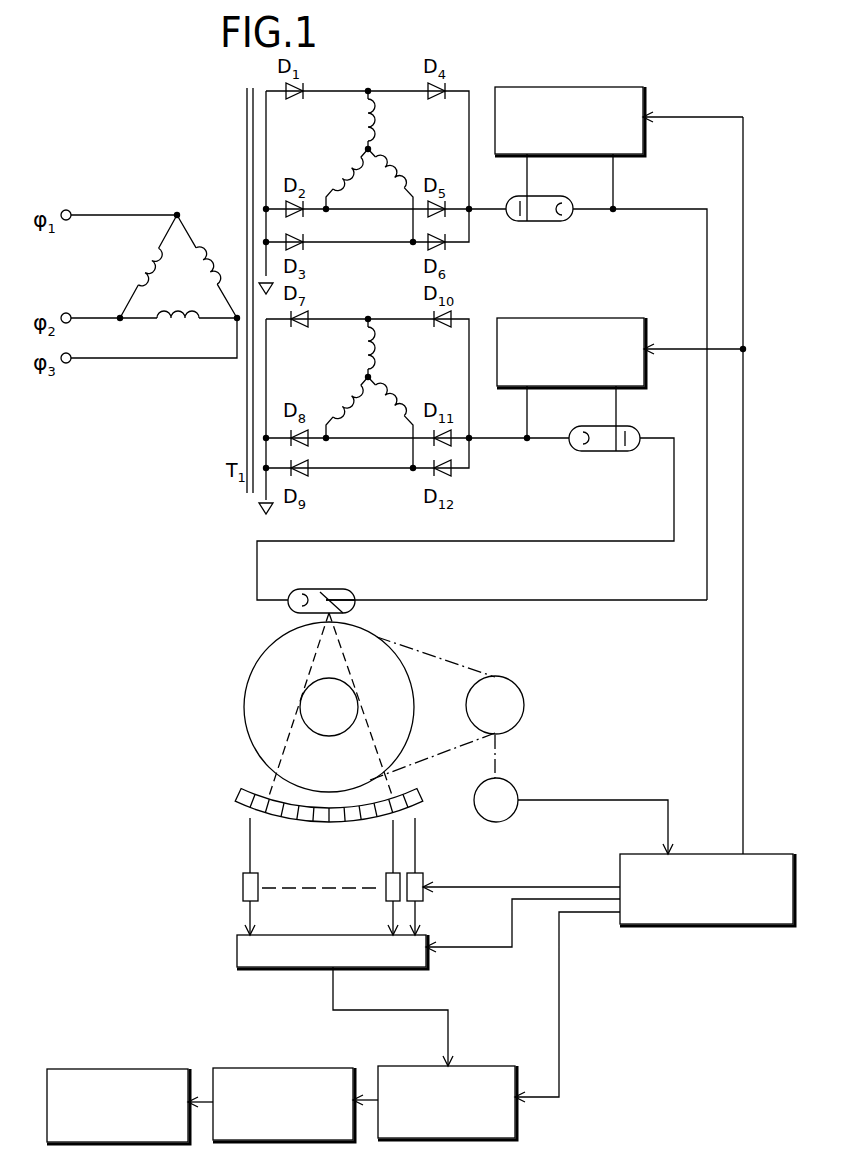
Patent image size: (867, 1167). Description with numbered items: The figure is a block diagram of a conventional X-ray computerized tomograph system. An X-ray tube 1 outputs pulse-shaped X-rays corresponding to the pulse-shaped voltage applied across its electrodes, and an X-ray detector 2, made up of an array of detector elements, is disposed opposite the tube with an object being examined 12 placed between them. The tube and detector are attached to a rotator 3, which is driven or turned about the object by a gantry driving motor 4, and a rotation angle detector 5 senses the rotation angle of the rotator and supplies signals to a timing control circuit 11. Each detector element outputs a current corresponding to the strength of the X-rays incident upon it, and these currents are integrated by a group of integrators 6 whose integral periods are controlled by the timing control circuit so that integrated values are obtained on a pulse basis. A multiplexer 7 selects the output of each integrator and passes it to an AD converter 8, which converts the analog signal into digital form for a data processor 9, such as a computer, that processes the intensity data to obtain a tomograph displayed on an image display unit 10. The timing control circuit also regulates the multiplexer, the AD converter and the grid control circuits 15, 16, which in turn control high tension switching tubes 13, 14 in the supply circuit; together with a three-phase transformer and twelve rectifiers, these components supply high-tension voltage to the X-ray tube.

The X-ray tube 1 is at (330, 589).
The X-ray detector 2 is at (245, 800).
The rotator 3 is at (263, 652).
The gantry driving motor 4 is at (512, 695).
The rotation angle detector 5 is at (514, 790).
The group of integrators 6 is at (243, 893).
The multiplexer 7 is at (237, 952).
The AD converter 8 is at (487, 1066).
The data processor 9 is at (277, 1068).
The image display unit 10 is at (122, 1069).
The timing control circuit 11 is at (720, 924).
The object being examined 12 is at (316, 707).
The high tension switching tube 13 is at (578, 258).
The high tension switching tube 14 is at (598, 452).
The grid control circuit 15 is at (597, 87).
The grid control circuit 16 is at (630, 386).